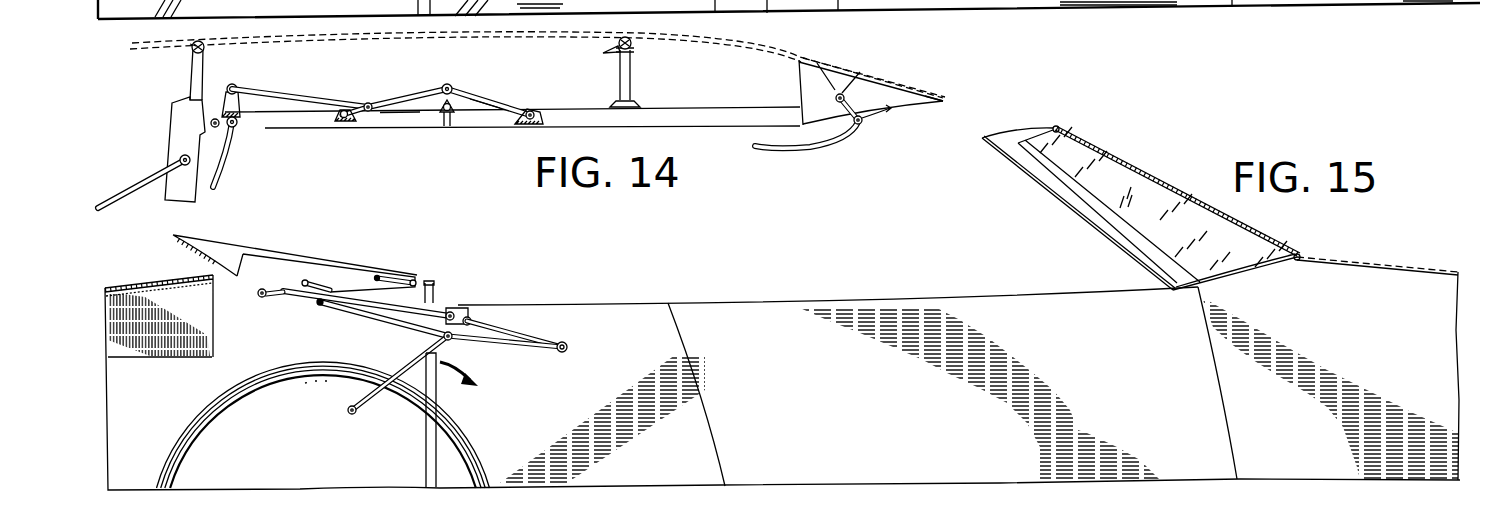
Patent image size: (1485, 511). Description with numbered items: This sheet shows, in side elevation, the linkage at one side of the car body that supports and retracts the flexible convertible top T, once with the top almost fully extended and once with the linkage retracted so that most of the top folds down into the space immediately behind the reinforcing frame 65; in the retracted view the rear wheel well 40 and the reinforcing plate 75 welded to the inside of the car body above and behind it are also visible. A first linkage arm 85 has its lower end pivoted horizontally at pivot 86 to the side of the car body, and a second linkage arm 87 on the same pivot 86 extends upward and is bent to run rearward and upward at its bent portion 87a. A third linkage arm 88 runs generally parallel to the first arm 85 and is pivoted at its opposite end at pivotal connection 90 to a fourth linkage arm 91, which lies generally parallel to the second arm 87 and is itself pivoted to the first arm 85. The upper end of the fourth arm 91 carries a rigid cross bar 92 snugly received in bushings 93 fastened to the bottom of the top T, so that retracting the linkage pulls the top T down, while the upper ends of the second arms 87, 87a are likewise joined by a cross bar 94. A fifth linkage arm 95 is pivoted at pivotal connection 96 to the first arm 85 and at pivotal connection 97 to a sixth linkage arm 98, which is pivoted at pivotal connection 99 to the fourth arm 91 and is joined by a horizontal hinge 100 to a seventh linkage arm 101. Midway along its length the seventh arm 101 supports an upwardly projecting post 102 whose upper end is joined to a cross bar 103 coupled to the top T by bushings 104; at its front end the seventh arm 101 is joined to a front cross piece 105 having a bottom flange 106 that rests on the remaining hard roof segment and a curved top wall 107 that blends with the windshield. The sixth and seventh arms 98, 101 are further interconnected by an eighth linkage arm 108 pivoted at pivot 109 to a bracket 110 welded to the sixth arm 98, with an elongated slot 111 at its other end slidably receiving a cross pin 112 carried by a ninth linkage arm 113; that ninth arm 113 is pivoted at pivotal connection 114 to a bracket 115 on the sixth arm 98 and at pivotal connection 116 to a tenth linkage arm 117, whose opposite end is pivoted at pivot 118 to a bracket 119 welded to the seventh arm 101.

In FIG. 14, the convertible top T is at (540, 35).
In FIG. 15, the rear wheel well 40 is at (260, 451).
In FIG. 15, the reinforcing frame 65 is at (465, 420).
In FIG. 15, the reinforcing plate 75 is at (202, 322).
In FIG. 15, the first linkage arm 85 is at (503, 326).
In FIG. 15, the pivot 86 is at (567, 347).
In FIG. 15, the second linkage arm 87 is at (497, 343).
In FIG. 15, the bent portion of second linkage arm 87a is at (367, 383).
In FIG. 14, the third linkage arm 88 is at (133, 197).
In FIG. 15, the third linkage arm 88 is at (380, 316).
In FIG. 14, the pivotal connection 90 is at (172, 147).
In FIG. 15, the pivotal connection 90 is at (318, 305).
In FIG. 14, the fourth linkage arm 91 is at (175, 128).
In FIG. 15, the fourth linkage arm 91 is at (440, 310).
In FIG. 14, the cross bar 92 is at (192, 42).
In FIG. 15, the cross bar 92 is at (258, 295).
In FIG. 14, the bushings 93 is at (205, 50).
In FIG. 15, the bushings 93 is at (429, 292).
In FIG. 15, the cross bar 94 is at (348, 417).
In FIG. 14, the fifth linkage arm 95 is at (228, 170).
In FIG. 15, the fifth linkage arm 95 is at (373, 309).
In FIG. 15, the pivotal connection 96 is at (470, 318).
In FIG. 14, the pivotal connection 97 is at (237, 128).
In FIG. 14, the sixth linkage arm 98 is at (405, 122).
In FIG. 14, the pivotal connection 99 is at (207, 117).
In FIG. 14, the hinge 100 is at (455, 113).
In FIG. 14, the seventh linkage arm 101 is at (715, 118).
In FIG. 15, the seventh linkage arm 101 is at (282, 253).
In FIG. 14, the post 102 is at (630, 67).
In FIG. 14, the cross bar 103 is at (633, 40).
In FIG. 14, the bushings 104 is at (618, 47).
In FIG. 14, the front cross piece 105 is at (880, 90).
In FIG. 15, the front cross piece 105 is at (203, 243).
In FIG. 14, the bottom flange 106 is at (912, 107).
In FIG. 14, the curved top wall 107 is at (917, 93).
In FIG. 15, the curved top wall 107 is at (180, 242).
In FIG. 14, the eighth linkage arm 108 is at (275, 93).
In FIG. 14, the pivot 109 is at (234, 86).
In FIG. 14, the bracket 110 is at (222, 100).
In FIG. 14, the elongated slot 111 is at (347, 104).
In FIG. 14, the cross pin 112 is at (420, 88).
In FIG. 14, the ninth linkage arm 113 is at (428, 84).
In FIG. 14, the pivotal connection 114 is at (340, 127).
In FIG. 14, the bracket 115 is at (328, 117).
In FIG. 14, the pivotal connection 116 is at (455, 88).
In FIG. 14, the tenth linkage arm 117 is at (500, 105).
In FIG. 14, the pivot 118 is at (528, 110).
In FIG. 14, the bracket 119 is at (518, 127).